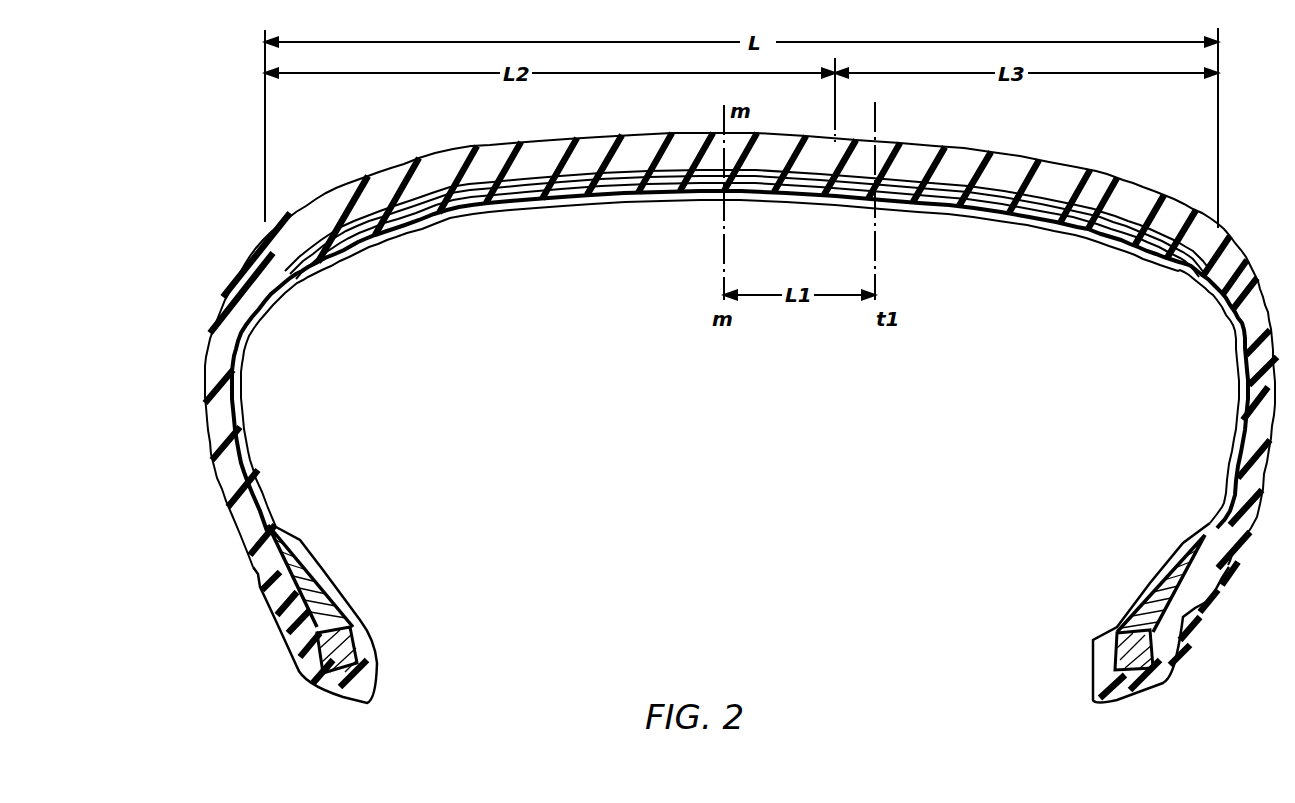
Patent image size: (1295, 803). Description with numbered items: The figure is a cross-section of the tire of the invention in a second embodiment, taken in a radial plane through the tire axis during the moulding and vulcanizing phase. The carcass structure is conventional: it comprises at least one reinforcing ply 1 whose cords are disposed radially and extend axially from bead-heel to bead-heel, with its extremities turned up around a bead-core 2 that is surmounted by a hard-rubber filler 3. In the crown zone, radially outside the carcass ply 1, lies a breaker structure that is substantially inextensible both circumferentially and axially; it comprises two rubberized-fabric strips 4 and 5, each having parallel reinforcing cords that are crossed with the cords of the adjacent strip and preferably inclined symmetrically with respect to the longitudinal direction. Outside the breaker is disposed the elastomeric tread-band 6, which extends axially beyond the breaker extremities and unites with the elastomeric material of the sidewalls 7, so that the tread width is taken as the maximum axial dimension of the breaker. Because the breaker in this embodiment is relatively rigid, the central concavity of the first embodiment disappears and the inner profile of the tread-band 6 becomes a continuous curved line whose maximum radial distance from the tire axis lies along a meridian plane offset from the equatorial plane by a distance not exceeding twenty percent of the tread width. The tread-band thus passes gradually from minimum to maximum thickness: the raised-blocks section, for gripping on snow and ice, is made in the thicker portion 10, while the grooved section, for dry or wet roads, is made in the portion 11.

The reinforcing ply 1 is at (245, 456).
The bead-core 2 is at (355, 656).
The hard-rubber filler 3 is at (320, 598).
The rubberized-fabric strip 4 is at (458, 197).
The rubberized-fabric strip 5 is at (559, 200).
The tread-band 6 is at (740, 339).
The sidewall 7 is at (212, 411).
The portion 10 is at (637, 156).
The portion 11 is at (1047, 180).